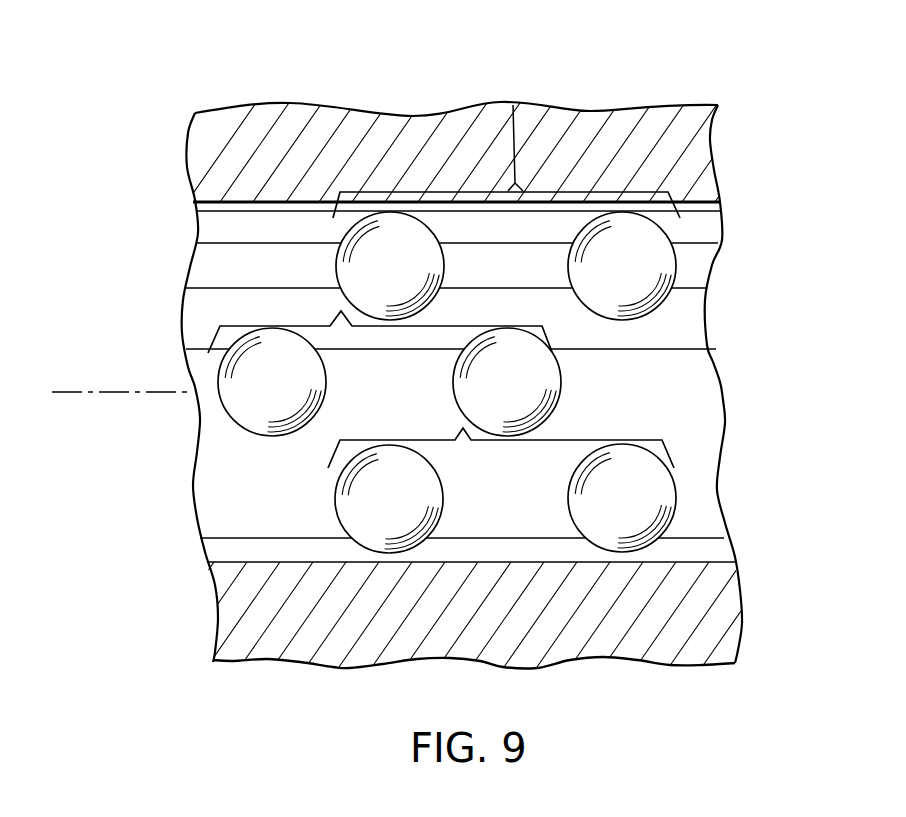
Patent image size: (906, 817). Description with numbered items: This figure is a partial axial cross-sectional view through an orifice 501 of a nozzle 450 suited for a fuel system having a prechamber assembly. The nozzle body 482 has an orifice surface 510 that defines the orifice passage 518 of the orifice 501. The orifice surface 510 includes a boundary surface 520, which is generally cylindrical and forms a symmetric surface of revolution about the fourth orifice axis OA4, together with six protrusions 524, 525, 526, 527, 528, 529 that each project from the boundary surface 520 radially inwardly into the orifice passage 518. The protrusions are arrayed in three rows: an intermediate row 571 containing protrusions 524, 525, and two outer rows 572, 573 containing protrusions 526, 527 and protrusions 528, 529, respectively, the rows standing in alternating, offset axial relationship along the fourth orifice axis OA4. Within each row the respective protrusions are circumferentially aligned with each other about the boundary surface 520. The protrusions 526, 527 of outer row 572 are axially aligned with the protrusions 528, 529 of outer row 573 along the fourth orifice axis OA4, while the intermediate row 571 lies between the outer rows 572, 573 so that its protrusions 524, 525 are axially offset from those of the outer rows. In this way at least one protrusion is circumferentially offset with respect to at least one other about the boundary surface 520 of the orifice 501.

The nozzle 450 is at (135, 123).
The nozzle body 482 is at (307, 135).
The orifice passage 518 is at (258, 245).
The outer row 572 is at (513, 105).
The protrusion 527 is at (622, 263).
The protrusion 526 is at (377, 268).
The orifice 501 is at (672, 322).
The intermediate row 571 is at (351, 326).
The protrusion 525 is at (508, 390).
The protrusion 524 is at (250, 407).
The boundary surface 520 is at (248, 465).
The protrusion 529 is at (628, 493).
The outer row 573 is at (463, 428).
The protrusion 528 is at (383, 507).
The orifice surface 510 is at (515, 502).
The fourth orifice axis OA4 is at (120, 392).